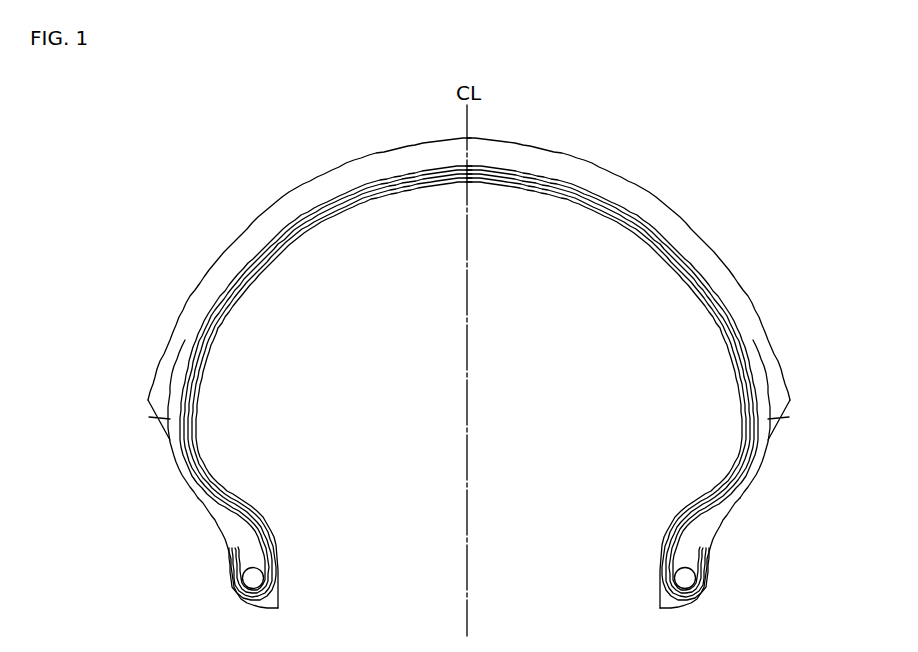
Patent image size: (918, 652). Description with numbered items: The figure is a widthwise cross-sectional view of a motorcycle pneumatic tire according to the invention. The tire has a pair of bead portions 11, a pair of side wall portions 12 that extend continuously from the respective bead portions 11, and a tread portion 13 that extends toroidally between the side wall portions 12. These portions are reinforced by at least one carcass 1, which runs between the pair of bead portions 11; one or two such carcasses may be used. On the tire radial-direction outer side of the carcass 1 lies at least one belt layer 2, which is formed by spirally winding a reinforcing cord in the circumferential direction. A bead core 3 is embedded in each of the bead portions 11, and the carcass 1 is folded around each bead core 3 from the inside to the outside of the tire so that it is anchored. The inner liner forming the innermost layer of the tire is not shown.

The carcass 1 is at (510, 360).
The belt layer 2 is at (697, 274).
The bead core 3 is at (685, 578).
The bead portion 11 is at (712, 547).
The side wall portion 12 is at (771, 437).
The tread portion 13 is at (610, 172).